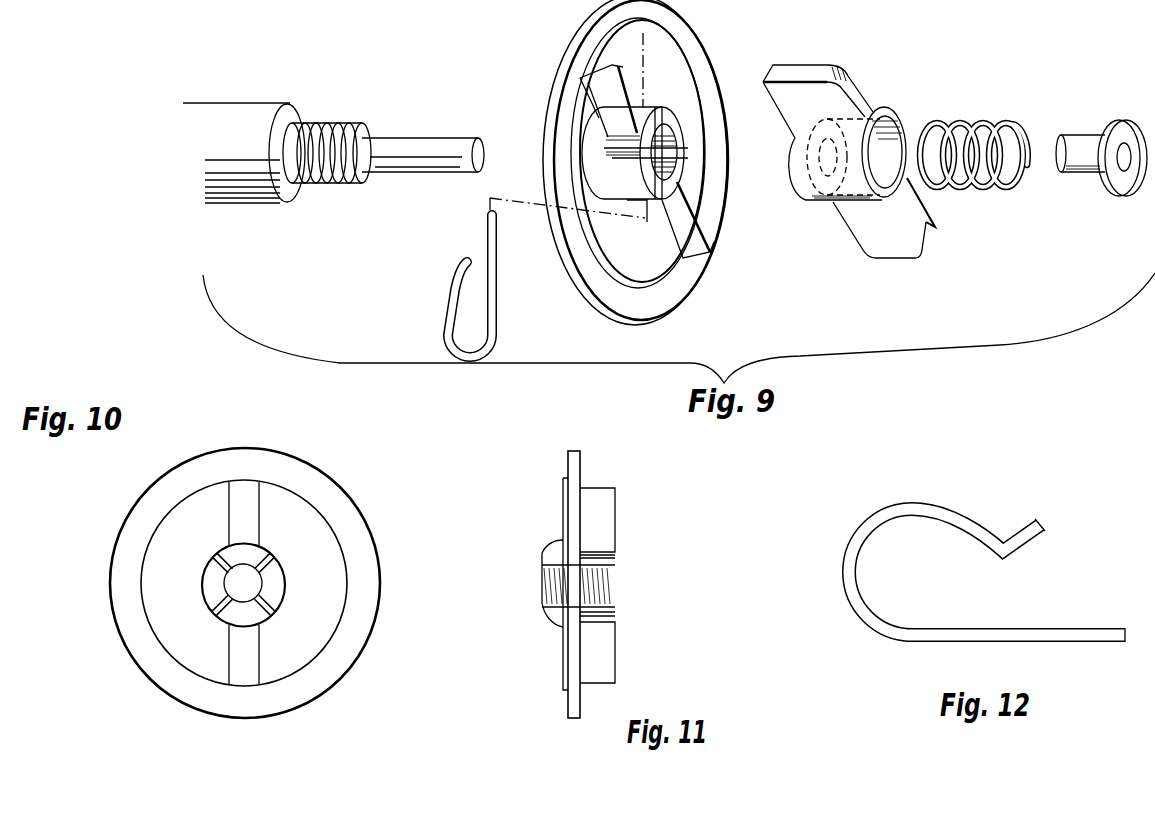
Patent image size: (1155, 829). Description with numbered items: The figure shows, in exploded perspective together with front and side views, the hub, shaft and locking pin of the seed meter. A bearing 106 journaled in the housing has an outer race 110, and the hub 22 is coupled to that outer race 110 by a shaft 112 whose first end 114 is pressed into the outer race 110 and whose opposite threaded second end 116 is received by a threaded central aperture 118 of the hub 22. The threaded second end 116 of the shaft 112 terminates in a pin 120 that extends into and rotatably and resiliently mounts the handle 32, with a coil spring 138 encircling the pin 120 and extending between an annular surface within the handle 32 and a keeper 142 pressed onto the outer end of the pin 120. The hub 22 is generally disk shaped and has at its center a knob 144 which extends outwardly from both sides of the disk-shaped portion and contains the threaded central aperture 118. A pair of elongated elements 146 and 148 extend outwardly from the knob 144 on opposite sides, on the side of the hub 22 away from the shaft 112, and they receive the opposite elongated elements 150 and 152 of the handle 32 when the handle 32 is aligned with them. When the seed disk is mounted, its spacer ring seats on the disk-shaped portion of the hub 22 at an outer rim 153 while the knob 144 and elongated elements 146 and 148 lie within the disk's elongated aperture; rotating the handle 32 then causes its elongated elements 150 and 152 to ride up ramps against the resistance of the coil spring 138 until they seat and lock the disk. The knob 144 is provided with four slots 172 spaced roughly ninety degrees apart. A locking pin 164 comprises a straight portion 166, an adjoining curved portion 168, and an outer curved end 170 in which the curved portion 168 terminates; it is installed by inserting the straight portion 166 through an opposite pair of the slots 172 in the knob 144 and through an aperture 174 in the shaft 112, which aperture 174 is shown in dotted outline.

In FIG. 9, the bearing 106 is at (232, 102).
In FIG. 9, the outer race 110 is at (293, 113).
In FIG. 9, the shaft 112 is at (300, 186).
In FIG. 9, the first end 114 is at (302, 125).
In FIG. 9, the threaded second end 116 is at (357, 124).
In FIG. 9, the threaded central aperture 118 is at (680, 163).
In FIG. 10, the threaded central aperture 118 is at (257, 583).
In FIG. 9, the pin 120 is at (397, 173).
In FIG. 9, the aperture 174 is at (337, 185).
In FIG. 9, the hub 22 is at (640, 162).
In FIG. 10, the hub 22 is at (276, 583).
In FIG. 11, the hub 22 is at (602, 584).
In FIG. 9, the elongated element 148 is at (620, 88).
In FIG. 10, the elongated element 148 is at (250, 513).
In FIG. 11, the elongated element 148 is at (608, 505).
In FIG. 9, the elongated element 146 is at (703, 224).
In FIG. 10, the elongated element 146 is at (252, 651).
In FIG. 11, the elongated element 146 is at (607, 660).
In FIG. 9, the knob 144 is at (668, 118).
In FIG. 10, the knob 144 is at (212, 584).
In FIG. 11, the knob 144 is at (552, 551).
In FIG. 9, the outer rim 153 is at (700, 147).
In FIG. 10, the outer rim 153 is at (340, 590).
In FIG. 9, the slots 172 is at (622, 208).
In FIG. 10, the slots 172 is at (270, 560).
In FIG. 11, the slots 172 is at (613, 610).
In FIG. 9, the elongated element 152 is at (805, 93).
In FIG. 9, the elongated element 150 is at (891, 240).
In FIG. 9, the handle 32 is at (875, 156).
In FIG. 9, the coil spring 138 is at (972, 123).
In FIG. 9, the keeper 142 is at (1120, 98).
In FIG. 9, the locking pin 164 is at (446, 308).
In FIG. 12, the locking pin 164 is at (953, 595).
In FIG. 12, the straight portion 166 is at (1063, 639).
In FIG. 12, the curved portion 168 is at (840, 566).
In FIG. 12, the outer curved end 170 is at (1008, 552).